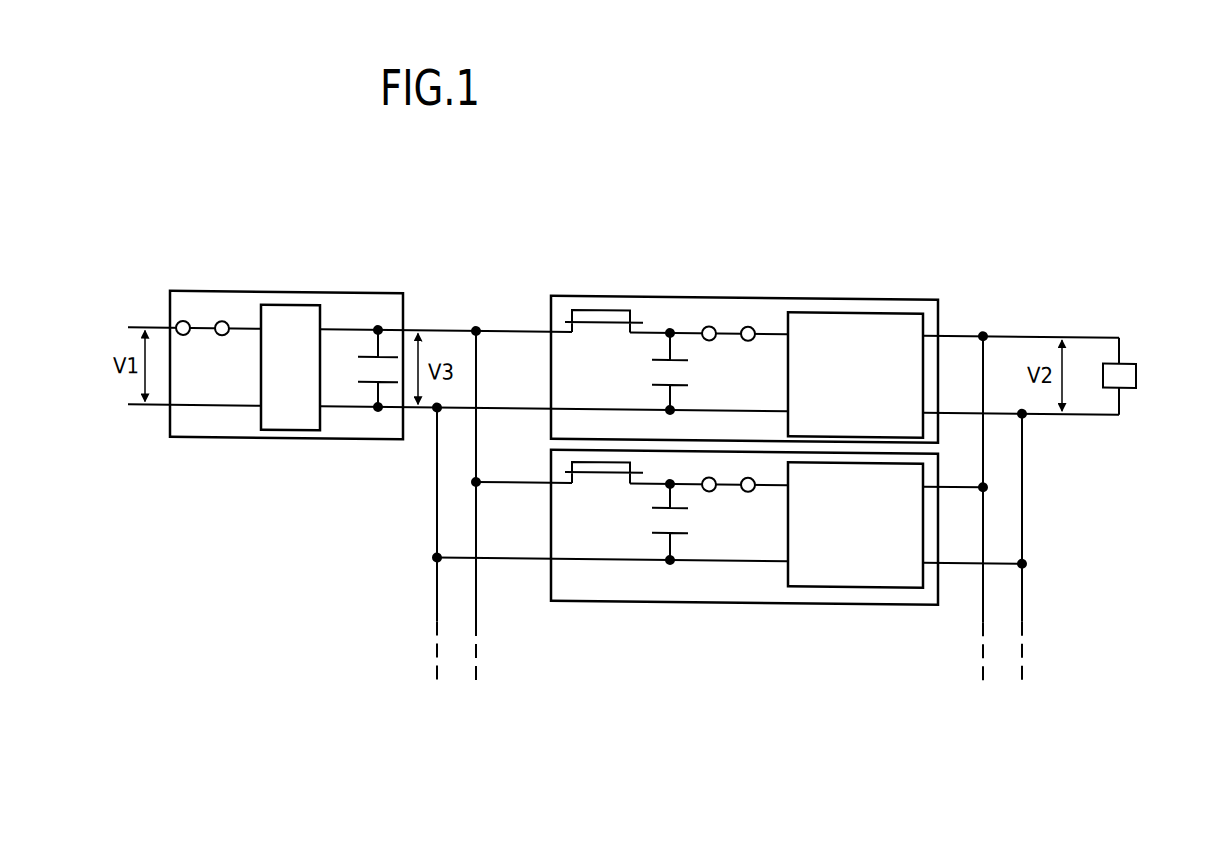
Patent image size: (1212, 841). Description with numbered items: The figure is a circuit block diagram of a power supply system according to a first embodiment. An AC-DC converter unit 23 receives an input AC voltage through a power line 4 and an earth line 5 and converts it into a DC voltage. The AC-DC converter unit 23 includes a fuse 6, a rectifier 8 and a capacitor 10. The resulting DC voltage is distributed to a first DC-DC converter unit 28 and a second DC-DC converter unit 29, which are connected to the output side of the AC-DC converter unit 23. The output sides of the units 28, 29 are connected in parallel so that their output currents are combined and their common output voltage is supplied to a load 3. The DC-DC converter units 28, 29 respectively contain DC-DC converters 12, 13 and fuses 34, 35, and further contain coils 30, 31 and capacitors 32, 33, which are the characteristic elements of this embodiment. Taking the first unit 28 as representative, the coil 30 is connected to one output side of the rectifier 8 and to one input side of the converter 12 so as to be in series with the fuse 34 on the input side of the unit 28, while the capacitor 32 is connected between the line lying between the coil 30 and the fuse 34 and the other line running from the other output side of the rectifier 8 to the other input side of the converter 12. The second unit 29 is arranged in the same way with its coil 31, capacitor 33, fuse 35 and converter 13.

The load 3 is at (1130, 378).
The power line 4 is at (137, 316).
The earth line 5 is at (137, 409).
The fuse 6 is at (203, 334).
The rectifier 8 is at (268, 429).
The capacitor 10 is at (363, 380).
The DC-DC converter 12 is at (912, 303).
The DC-DC converter 13 is at (903, 583).
The AC-DC converter unit 23 is at (305, 359).
The first DC-DC converter unit 28 is at (734, 308).
The second DC-DC converter unit 29 is at (739, 577).
The coil 30 is at (597, 304).
The coil 31 is at (595, 467).
The capacitor 32 is at (658, 366).
The capacitor 33 is at (655, 529).
The fuse 34 is at (722, 330).
The fuse 35 is at (722, 477).